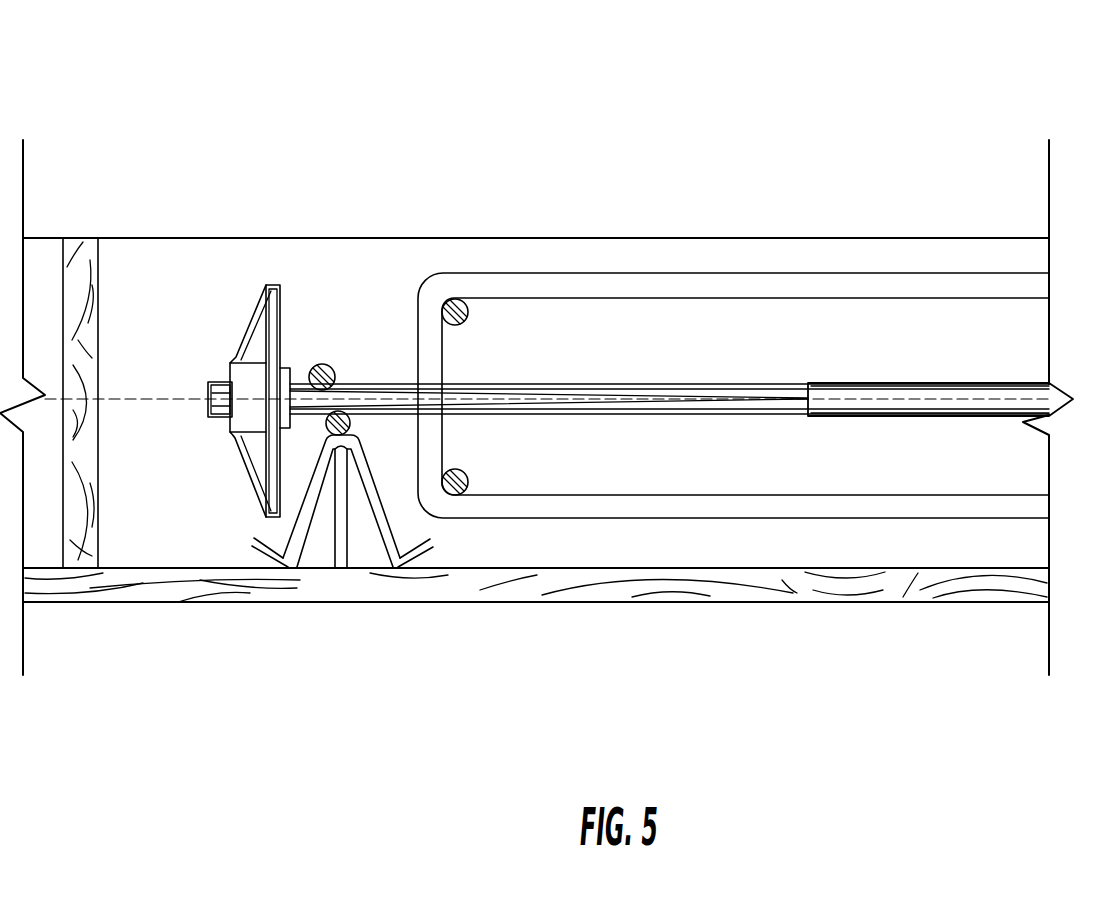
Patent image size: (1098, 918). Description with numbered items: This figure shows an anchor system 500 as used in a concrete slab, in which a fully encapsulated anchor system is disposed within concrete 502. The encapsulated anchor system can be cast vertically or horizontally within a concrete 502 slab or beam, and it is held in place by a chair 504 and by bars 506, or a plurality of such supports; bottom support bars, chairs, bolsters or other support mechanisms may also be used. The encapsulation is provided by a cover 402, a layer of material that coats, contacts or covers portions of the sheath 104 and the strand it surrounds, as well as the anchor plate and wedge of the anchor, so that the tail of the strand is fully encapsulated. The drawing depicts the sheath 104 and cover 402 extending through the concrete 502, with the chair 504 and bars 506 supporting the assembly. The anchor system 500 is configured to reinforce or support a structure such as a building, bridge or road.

The anchor system 500 is at (847, 88).
The concrete 502 is at (328, 290).
The chair 504 is at (283, 562).
The bars 506 is at (322, 364).
The cover 402 is at (745, 388).
The sheath 104 is at (885, 388).